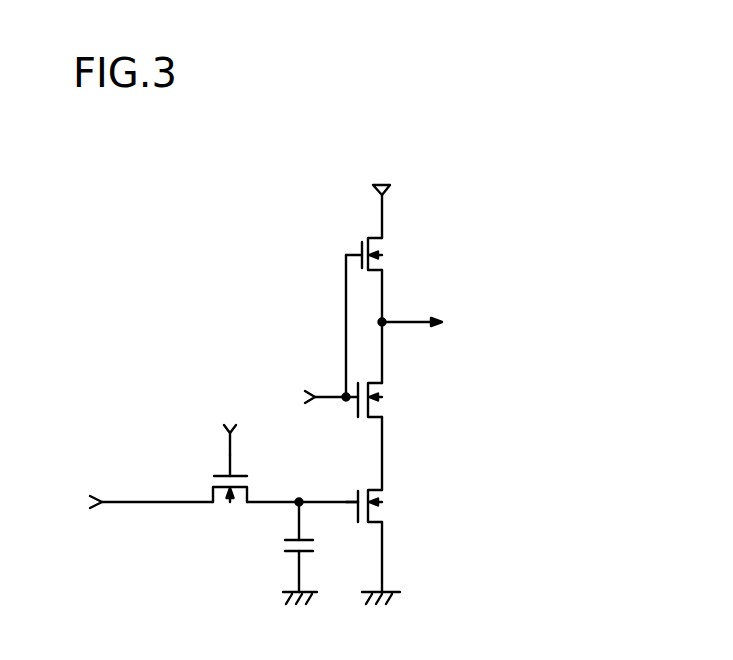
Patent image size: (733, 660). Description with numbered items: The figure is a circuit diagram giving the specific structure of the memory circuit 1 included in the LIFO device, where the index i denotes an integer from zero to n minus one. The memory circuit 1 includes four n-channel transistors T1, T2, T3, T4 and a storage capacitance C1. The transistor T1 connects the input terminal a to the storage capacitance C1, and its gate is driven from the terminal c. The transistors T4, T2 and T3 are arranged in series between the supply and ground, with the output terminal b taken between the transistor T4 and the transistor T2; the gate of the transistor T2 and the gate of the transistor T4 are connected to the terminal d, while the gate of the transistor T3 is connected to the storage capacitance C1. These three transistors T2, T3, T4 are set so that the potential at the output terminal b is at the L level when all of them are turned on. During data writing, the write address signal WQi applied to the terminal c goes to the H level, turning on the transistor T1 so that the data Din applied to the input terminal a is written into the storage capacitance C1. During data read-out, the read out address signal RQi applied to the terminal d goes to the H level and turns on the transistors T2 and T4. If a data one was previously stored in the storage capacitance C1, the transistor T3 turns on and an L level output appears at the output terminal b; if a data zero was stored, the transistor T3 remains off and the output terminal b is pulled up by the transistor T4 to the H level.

The memory circuit 1 is at (494, 446).
The transistor T1 is at (223, 509).
The transistor T2 is at (390, 384).
The transistor T3 is at (392, 498).
The transistor T4 is at (390, 244).
The storage capacitance C1 is at (273, 558).
The input terminal a is at (136, 500).
The output terminal b is at (417, 319).
The terminal c is at (228, 454).
The terminal d is at (330, 393).
The data Din is at (64, 500).
The write address signal WQi is at (221, 415).
The read out address signal RQi is at (299, 395).